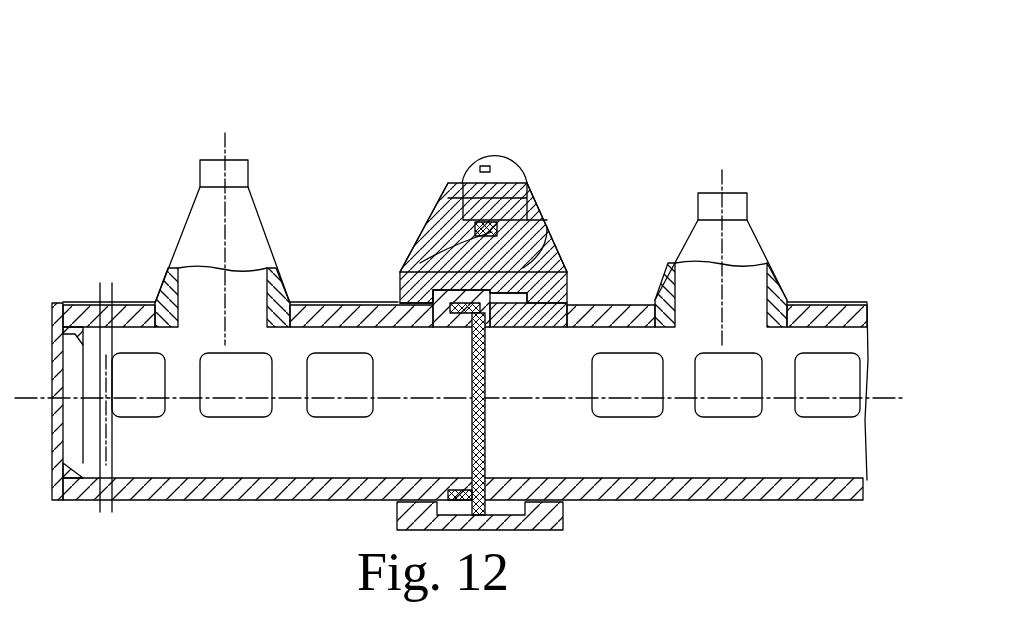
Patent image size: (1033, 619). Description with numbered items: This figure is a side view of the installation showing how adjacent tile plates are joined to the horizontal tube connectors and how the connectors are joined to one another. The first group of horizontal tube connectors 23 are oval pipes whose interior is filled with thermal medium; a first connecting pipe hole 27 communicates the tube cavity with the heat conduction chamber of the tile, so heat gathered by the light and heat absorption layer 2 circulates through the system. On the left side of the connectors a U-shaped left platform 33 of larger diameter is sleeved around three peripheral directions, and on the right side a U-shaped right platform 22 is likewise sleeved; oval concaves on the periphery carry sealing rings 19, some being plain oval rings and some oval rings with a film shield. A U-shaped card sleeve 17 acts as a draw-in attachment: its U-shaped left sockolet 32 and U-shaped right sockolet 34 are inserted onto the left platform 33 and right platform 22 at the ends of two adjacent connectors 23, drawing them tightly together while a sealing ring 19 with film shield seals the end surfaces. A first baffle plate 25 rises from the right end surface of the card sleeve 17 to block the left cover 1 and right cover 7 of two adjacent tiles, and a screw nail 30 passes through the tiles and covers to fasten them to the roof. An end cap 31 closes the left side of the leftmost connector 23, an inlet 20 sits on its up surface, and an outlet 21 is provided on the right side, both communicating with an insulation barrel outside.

The left cover 1 is at (506, 247).
The light and heat absorption layer 2 is at (330, 300).
The right cover 7 is at (505, 220).
The card sleeve 17 is at (462, 240).
The sealing ring 19 is at (460, 490).
The inlet 20 is at (186, 244).
The outlet 21 is at (707, 207).
The U-shaped right platform 22 is at (530, 265).
The first group of horizontal tube connectors 23 is at (128, 305).
The first baffle plate 25 is at (448, 248).
The first connecting pipe hole 27 is at (250, 382).
The screw nail 30 is at (486, 165).
The end cap 31 is at (55, 303).
The U-shaped left sockolet 32 is at (424, 292).
The U-shaped left platform 33 is at (568, 273).
The U-shaped right sockolet 34 is at (552, 297).